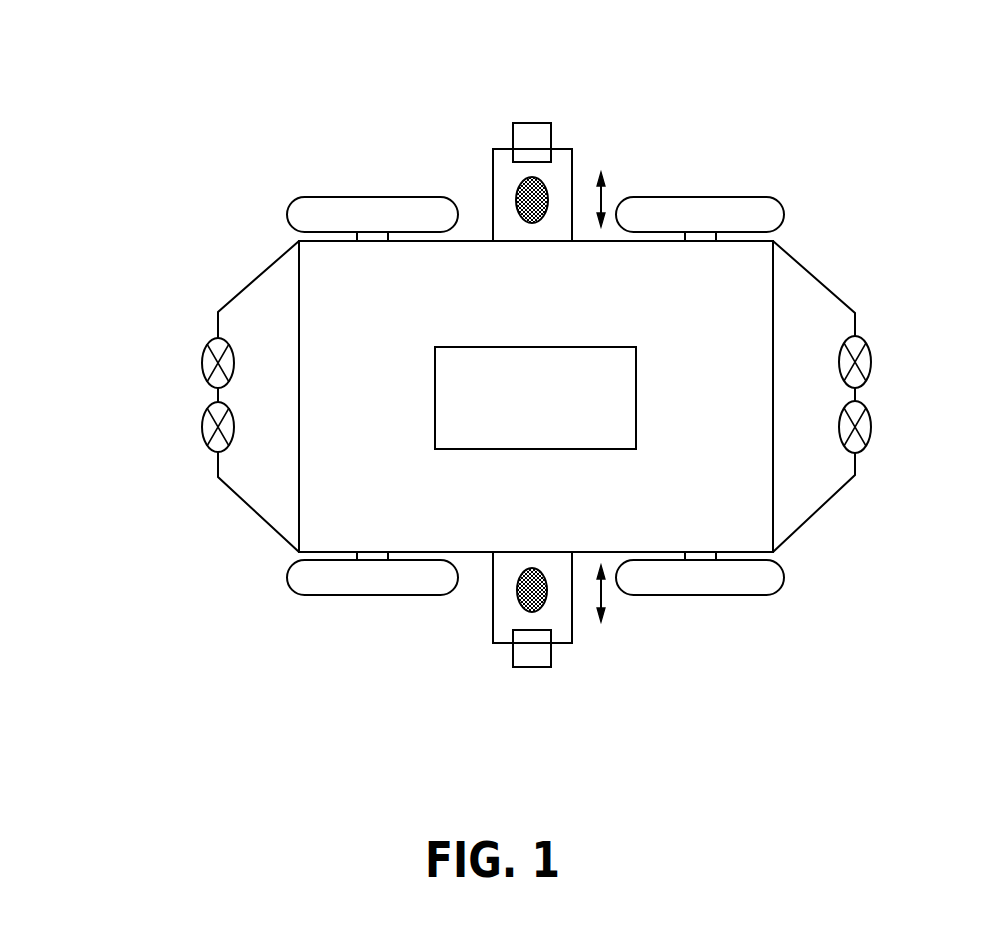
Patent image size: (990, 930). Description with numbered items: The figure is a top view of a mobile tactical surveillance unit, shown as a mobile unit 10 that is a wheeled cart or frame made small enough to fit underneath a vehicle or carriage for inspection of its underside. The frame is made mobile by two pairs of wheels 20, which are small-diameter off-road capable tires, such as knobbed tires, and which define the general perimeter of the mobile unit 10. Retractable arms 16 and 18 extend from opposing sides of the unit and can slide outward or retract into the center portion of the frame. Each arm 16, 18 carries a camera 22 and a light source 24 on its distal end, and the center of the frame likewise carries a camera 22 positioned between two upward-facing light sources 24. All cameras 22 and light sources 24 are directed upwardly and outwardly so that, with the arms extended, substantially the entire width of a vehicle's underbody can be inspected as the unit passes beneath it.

The mobile unit 10 is at (220, 596).
The retractable arm 16 is at (492, 624).
The retractable arm 18 is at (577, 131).
The wheels 20 is at (752, 196).
The camera 22 is at (539, 667).
The light source 24 is at (871, 420).